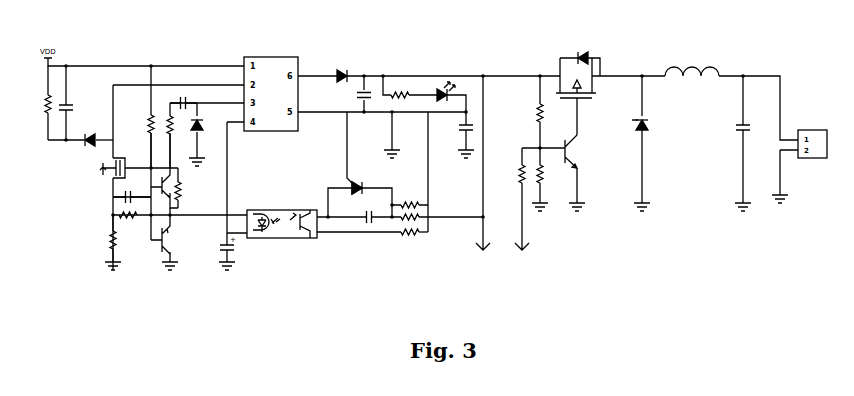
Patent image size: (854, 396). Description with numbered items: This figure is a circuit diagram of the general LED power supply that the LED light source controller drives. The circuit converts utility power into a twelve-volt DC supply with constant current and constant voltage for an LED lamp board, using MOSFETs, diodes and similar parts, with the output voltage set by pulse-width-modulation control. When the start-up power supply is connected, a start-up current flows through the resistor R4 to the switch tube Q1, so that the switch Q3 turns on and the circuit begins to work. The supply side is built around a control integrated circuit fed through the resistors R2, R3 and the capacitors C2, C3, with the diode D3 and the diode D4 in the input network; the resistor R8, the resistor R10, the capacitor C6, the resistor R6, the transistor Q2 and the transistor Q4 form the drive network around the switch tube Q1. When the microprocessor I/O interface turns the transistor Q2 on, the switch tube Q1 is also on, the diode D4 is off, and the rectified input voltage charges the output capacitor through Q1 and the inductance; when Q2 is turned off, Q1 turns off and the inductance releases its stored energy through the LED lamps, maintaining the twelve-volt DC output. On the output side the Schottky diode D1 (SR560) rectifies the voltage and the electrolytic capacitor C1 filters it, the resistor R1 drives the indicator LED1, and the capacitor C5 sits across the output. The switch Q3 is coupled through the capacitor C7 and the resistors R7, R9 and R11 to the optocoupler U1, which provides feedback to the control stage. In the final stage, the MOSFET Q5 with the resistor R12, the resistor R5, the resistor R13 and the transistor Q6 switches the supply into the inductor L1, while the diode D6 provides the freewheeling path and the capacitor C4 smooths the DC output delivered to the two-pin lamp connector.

The resistor R2 56K R2 is at (55, 103).
The capacitor C2 1KV 102K C2 is at (85, 104).
The diode D4 is at (90, 148).
The switch tube Q1 is at (103, 172).
The resistor R3 2.2K R3 is at (140, 117).
The resistor R4 is at (179, 135).
The capacitor C3 BBC 222J C3 is at (199, 98).
The diode D3 1N4148 D3 is at (210, 134).
The capacitor C6 103 C6 is at (133, 189).
The transistor Q2 is at (164, 188).
The resistor R6 510R R6 is at (189, 191).
The resistor R8 270R R8 is at (130, 225).
The resistor R10 1R7 R10 is at (103, 238).
The transistor Q4 1015 Q4 is at (162, 238).
The optocoupler U1 NEC2501 U1 is at (314, 211).
The electrolytic capacitor C1 is at (349, 95).
The diode D1 SR560 D1 is at (359, 70).
The resistor R1 1/8 1.2K R1 is at (410, 91).
The light emitting diode LED1 is at (449, 97).
The capacitor C5 250VAC 222 C5 is at (463, 135).
The switch Q3 is at (362, 165).
The capacitor C7 103 C7 is at (360, 223).
The resistor R7 13K R7 is at (426, 206).
The resistor R9 51K R9 is at (437, 219).
The resistor R11 150R R11 is at (436, 235).
The MOSFET Q5 SUF75N06 Q5 is at (582, 86).
The resistor R12 1K R12 is at (543, 113).
The resistor R5 1K R5 is at (516, 199).
The resistor R13 10K R13 is at (546, 179).
The NPN transistor Q6 is at (580, 173).
The diode D6 11DQ03 D6 is at (659, 143).
The inductor L1 L105 L1 is at (692, 60).
The capacitor C4 25V 100U C4 is at (746, 143).